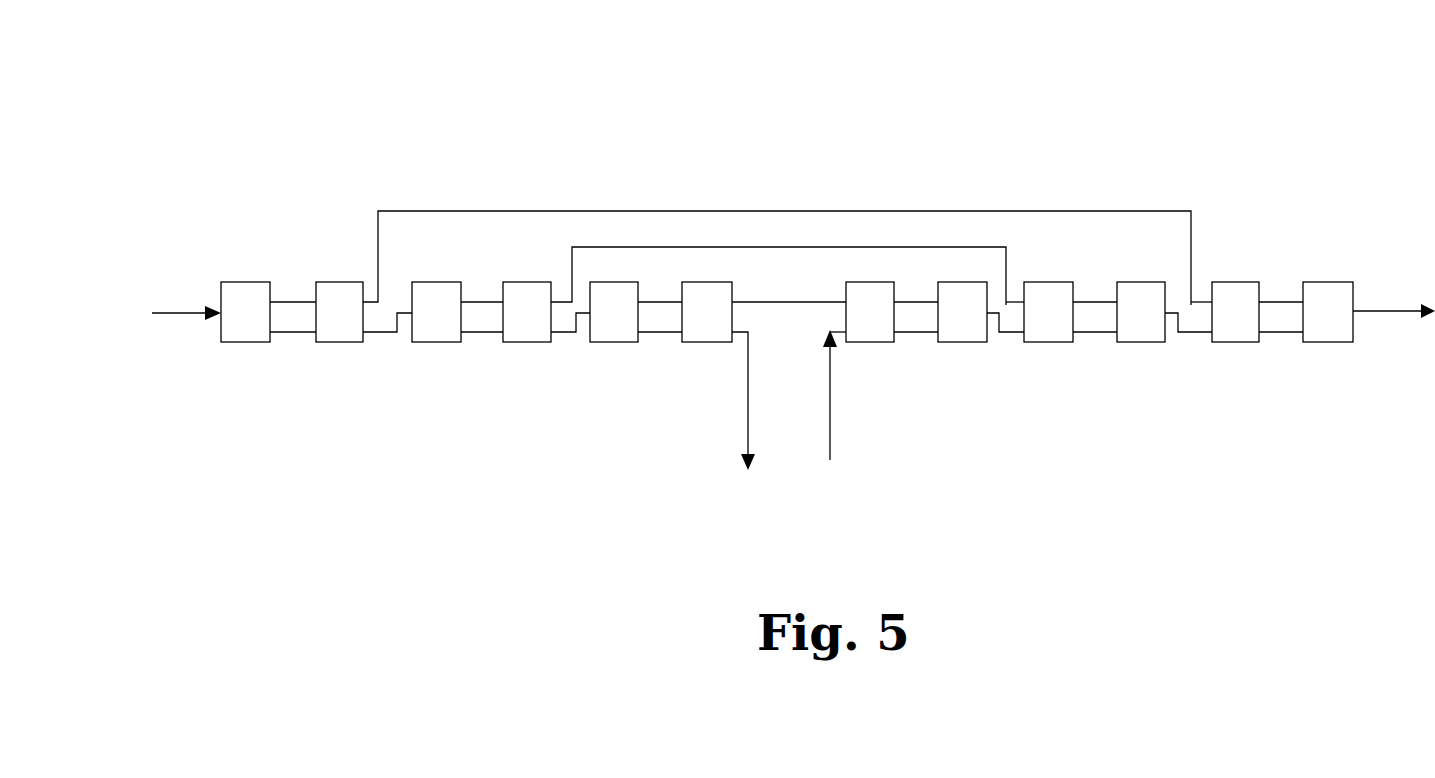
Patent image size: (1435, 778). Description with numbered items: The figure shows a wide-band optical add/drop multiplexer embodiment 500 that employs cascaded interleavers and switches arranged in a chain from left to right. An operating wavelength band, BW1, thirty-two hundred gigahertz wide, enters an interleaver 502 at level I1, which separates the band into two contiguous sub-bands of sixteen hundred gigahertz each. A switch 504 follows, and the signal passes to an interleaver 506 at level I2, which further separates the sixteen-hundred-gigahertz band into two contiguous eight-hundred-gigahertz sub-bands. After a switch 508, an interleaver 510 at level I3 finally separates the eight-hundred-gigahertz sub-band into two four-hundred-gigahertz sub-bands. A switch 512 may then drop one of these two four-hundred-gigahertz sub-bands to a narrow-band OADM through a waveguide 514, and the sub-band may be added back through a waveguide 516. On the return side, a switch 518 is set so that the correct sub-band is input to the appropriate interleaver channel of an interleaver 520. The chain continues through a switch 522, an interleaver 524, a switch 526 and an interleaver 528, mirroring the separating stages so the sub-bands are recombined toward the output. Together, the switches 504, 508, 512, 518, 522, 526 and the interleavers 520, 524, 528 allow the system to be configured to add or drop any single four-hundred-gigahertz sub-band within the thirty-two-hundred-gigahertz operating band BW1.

The embodiment employing interleavers 500 is at (1316, 111).
The interleaver 502 is at (228, 342).
The switch 504 is at (333, 282).
The interleaver 506 is at (440, 345).
The switch 508 is at (520, 343).
The interleaver 510 is at (620, 338).
The switch 512 is at (708, 343).
The waveguide 514 is at (748, 383).
The waveguide 516 is at (833, 392).
The switch 518 is at (878, 343).
The interleaver 520 is at (968, 343).
The switch 522 is at (1050, 343).
The interleaver 524 is at (1140, 343).
The switch 526 is at (1242, 343).
The interleaver 528 is at (1322, 343).